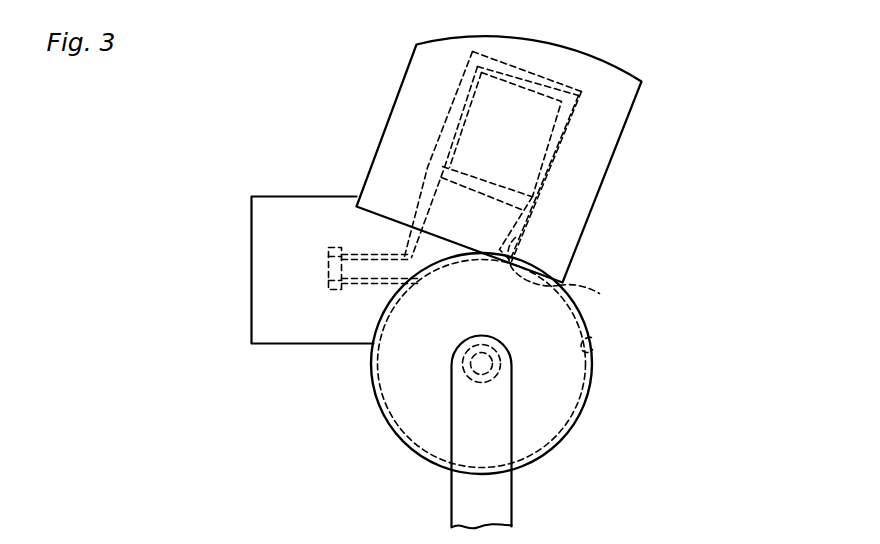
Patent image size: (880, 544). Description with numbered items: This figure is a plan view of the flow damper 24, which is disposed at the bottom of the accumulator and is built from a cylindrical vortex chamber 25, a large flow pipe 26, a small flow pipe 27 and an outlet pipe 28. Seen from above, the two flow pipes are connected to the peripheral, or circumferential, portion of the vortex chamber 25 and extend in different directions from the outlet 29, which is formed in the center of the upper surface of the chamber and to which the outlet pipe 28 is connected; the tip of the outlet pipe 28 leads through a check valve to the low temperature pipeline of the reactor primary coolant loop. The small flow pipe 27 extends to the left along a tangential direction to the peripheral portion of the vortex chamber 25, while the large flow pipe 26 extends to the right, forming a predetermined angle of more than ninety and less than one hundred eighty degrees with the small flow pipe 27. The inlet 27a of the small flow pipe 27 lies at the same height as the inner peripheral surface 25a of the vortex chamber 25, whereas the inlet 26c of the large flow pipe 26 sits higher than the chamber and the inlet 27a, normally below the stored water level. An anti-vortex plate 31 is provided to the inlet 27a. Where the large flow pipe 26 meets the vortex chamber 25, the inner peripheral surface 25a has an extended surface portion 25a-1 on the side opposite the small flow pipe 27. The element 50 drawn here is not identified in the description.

The flow damper 24 is at (340, 152).
The block body 50 is at (628, 119).
The large flow pipe 26 is at (527, 233).
The inlet of the large flow pipe 26c is at (522, 158).
The anti-vortex plate 31 is at (252, 322).
The small flow pipe 27 is at (364, 254).
The inlet of the small flow pipe 27a is at (328, 270).
The vortex chamber 25 is at (592, 386).
The inner peripheral surface 25a is at (593, 338).
The extended surface portion 25a-1 is at (600, 294).
The outlet 29 is at (507, 378).
The outlet pipe 28 is at (513, 503).